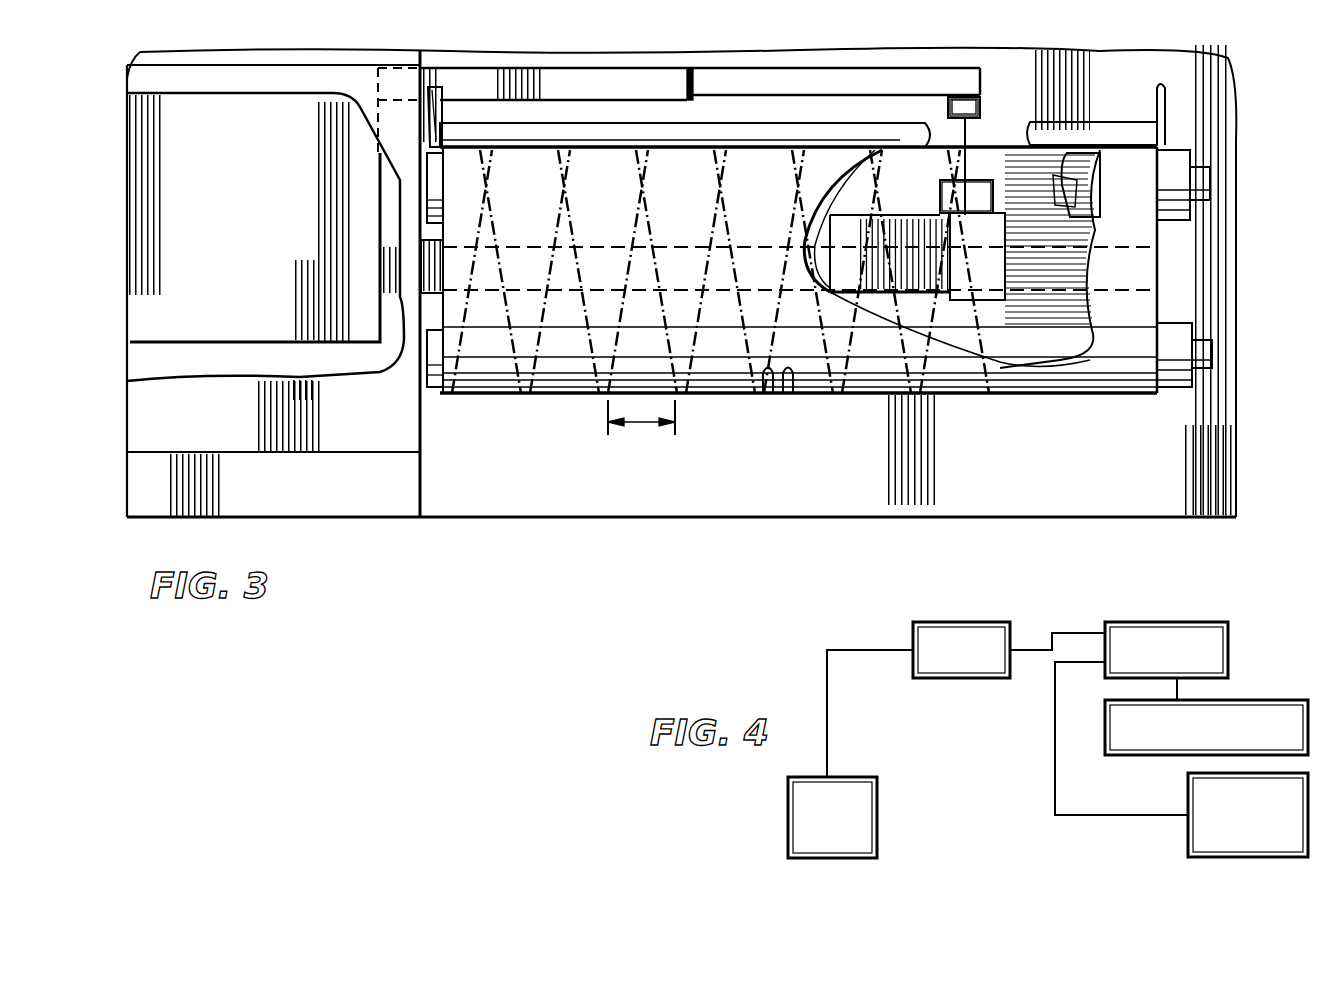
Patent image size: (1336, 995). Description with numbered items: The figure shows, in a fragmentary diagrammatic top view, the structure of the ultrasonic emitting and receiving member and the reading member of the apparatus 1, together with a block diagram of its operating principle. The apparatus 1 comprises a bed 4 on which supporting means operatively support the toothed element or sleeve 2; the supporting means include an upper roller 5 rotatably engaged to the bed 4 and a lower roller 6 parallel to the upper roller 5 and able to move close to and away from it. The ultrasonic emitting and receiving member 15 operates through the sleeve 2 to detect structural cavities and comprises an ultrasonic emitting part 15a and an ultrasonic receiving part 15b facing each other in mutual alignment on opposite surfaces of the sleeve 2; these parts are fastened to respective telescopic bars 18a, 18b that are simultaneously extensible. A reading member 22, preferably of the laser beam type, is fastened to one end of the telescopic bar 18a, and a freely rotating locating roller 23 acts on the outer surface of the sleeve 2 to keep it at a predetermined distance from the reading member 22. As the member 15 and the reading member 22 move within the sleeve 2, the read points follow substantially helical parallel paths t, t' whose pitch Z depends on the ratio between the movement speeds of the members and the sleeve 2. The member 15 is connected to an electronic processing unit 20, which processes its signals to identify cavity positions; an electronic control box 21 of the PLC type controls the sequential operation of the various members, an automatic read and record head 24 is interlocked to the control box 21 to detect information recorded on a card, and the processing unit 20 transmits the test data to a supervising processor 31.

In FIG. 4, the apparatus 1 is at (1262, 700).
In FIG. 3, the sleeve 2 is at (1124, 277).
In FIG. 3, the bed 4 is at (330, 492).
In FIG. 3, the upper roller 5 is at (1170, 170).
In FIG. 3, the lower roller 6 is at (432, 395).
In FIG. 3, the ultrasonic emitting and receiving member 15 is at (985, 90).
In FIG. 3, the ultrasonic emitting part 15a is at (950, 200).
In FIG. 3, the ultrasonic receiving part 15b is at (985, 112).
In FIG. 3, the telescopic bar 18a is at (832, 292).
In FIG. 3, the telescopic bar 18b is at (965, 95).
In FIG. 4, the electronic processing unit 20 is at (986, 622).
In FIG. 4, the electronic control box 21 is at (1204, 622).
In FIG. 3, the reading member 22 is at (985, 228).
In FIG. 3, the locating roller 23 is at (870, 138).
In FIG. 4, the automatic read and record head 24 is at (1188, 788).
In FIG. 4, the processor 31 is at (848, 777).
In FIG. 3, the pitch Z is at (641, 426).
In FIG. 3, the helical path t is at (758, 397).
In FIG. 3, the helical path t' is at (794, 397).